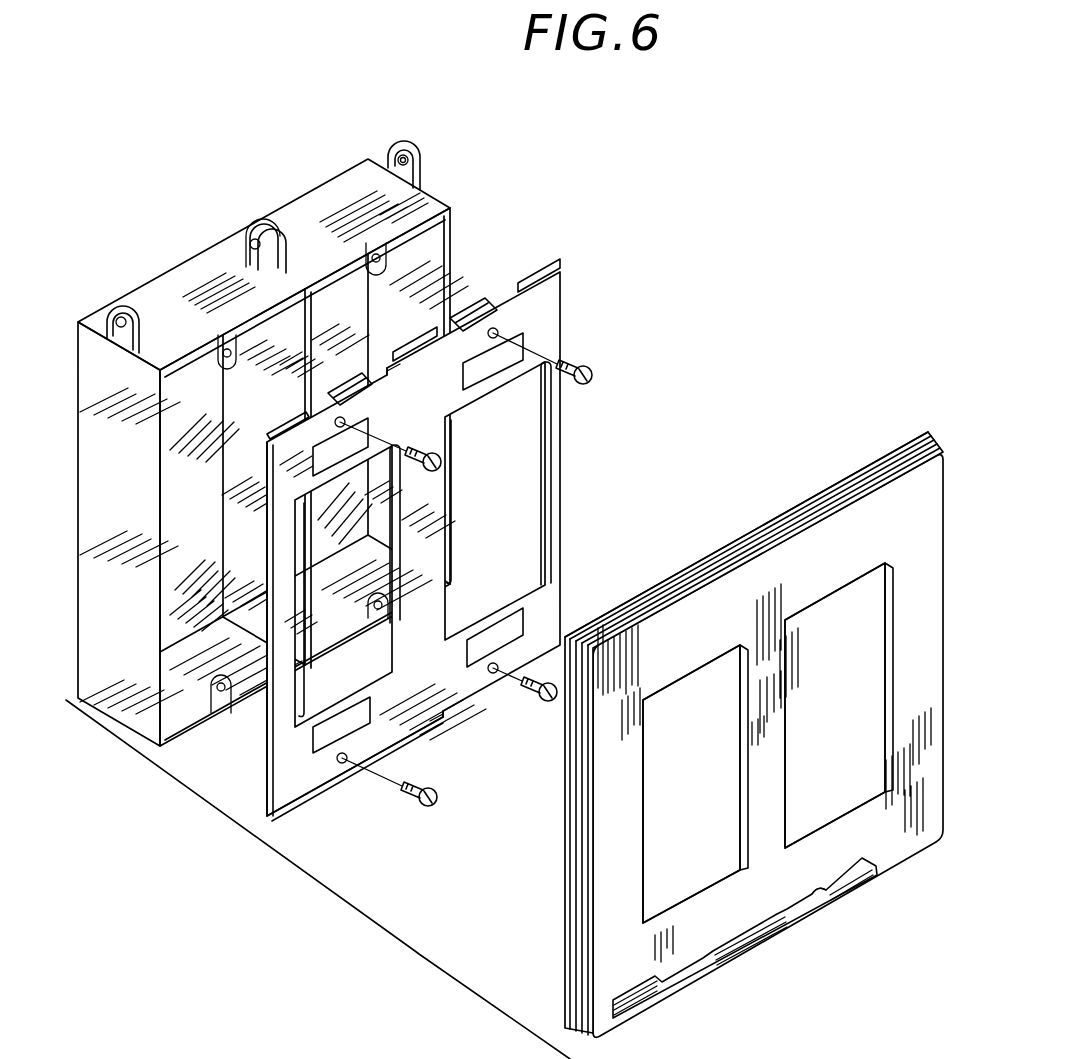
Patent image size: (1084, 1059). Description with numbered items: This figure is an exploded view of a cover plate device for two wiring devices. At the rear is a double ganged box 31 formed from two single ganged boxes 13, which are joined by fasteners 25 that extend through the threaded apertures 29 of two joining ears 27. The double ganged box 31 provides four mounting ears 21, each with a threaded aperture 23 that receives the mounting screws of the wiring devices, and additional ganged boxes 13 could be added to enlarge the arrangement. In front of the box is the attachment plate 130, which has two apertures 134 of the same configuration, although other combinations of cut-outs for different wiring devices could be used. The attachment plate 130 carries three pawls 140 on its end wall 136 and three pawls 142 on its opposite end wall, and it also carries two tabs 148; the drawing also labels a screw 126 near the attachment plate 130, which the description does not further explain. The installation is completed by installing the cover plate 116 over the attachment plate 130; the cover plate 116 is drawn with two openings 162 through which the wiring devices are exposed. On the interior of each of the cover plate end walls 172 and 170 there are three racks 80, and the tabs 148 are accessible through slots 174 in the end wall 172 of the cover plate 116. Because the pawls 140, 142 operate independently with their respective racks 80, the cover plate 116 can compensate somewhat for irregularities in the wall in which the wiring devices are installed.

The ganged box 13 is at (162, 273).
The mounting ears 21 is at (386, 258).
The threaded aperture 23 is at (227, 368).
The fasteners 25 is at (282, 228).
The joining ears 27 is at (108, 321).
The threaded apertures 29 is at (258, 250).
The double ganged box 31 is at (390, 142).
The racks 80 is at (873, 877).
The cover plate 116 is at (588, 921).
The screw 126 is at (423, 784).
The attachment plate 130 is at (274, 675).
The apertures 134 is at (545, 498).
The end wall 136 is at (385, 366).
The pawls 140 is at (420, 730).
The pawls 142 is at (294, 426).
The tabs 148 is at (468, 308).
The device opening 162 is at (878, 698).
The end wall 170 is at (874, 468).
The end wall 172 is at (807, 915).
The slots 174 is at (823, 893).